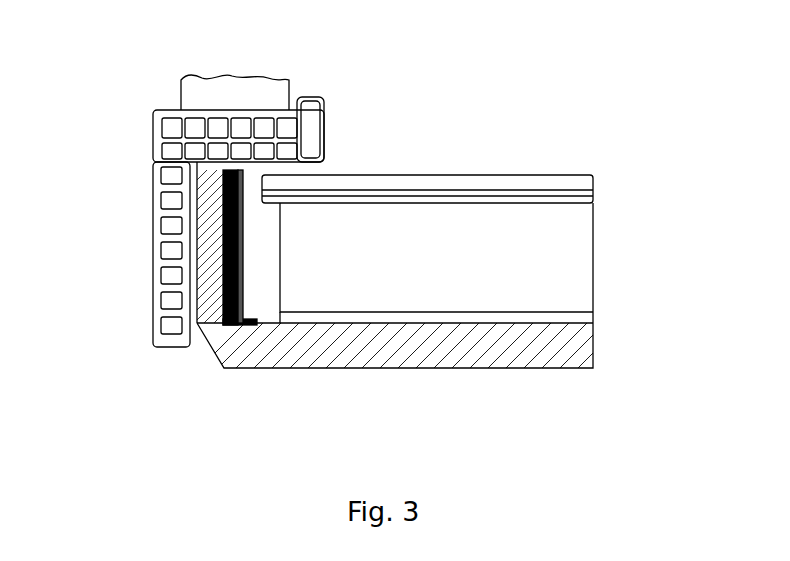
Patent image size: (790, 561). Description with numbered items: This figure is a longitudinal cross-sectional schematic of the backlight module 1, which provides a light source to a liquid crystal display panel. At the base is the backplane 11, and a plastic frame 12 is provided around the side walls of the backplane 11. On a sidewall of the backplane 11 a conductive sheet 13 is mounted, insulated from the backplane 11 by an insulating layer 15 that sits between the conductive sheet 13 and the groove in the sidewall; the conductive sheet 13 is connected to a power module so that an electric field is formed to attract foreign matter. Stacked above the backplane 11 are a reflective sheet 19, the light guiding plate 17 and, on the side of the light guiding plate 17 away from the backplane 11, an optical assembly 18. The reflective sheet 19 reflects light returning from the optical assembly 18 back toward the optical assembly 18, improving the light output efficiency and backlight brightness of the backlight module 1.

The backlight module 1 is at (448, 103).
The backplane 11 is at (237, 352).
The plastic frame 12 is at (172, 296).
The conductive sheet 13 is at (236, 240).
The insulating layer 15 is at (228, 282).
The light guiding plate 17 is at (572, 270).
The optical assembly 18 is at (556, 200).
The reflective sheet 19 is at (548, 322).